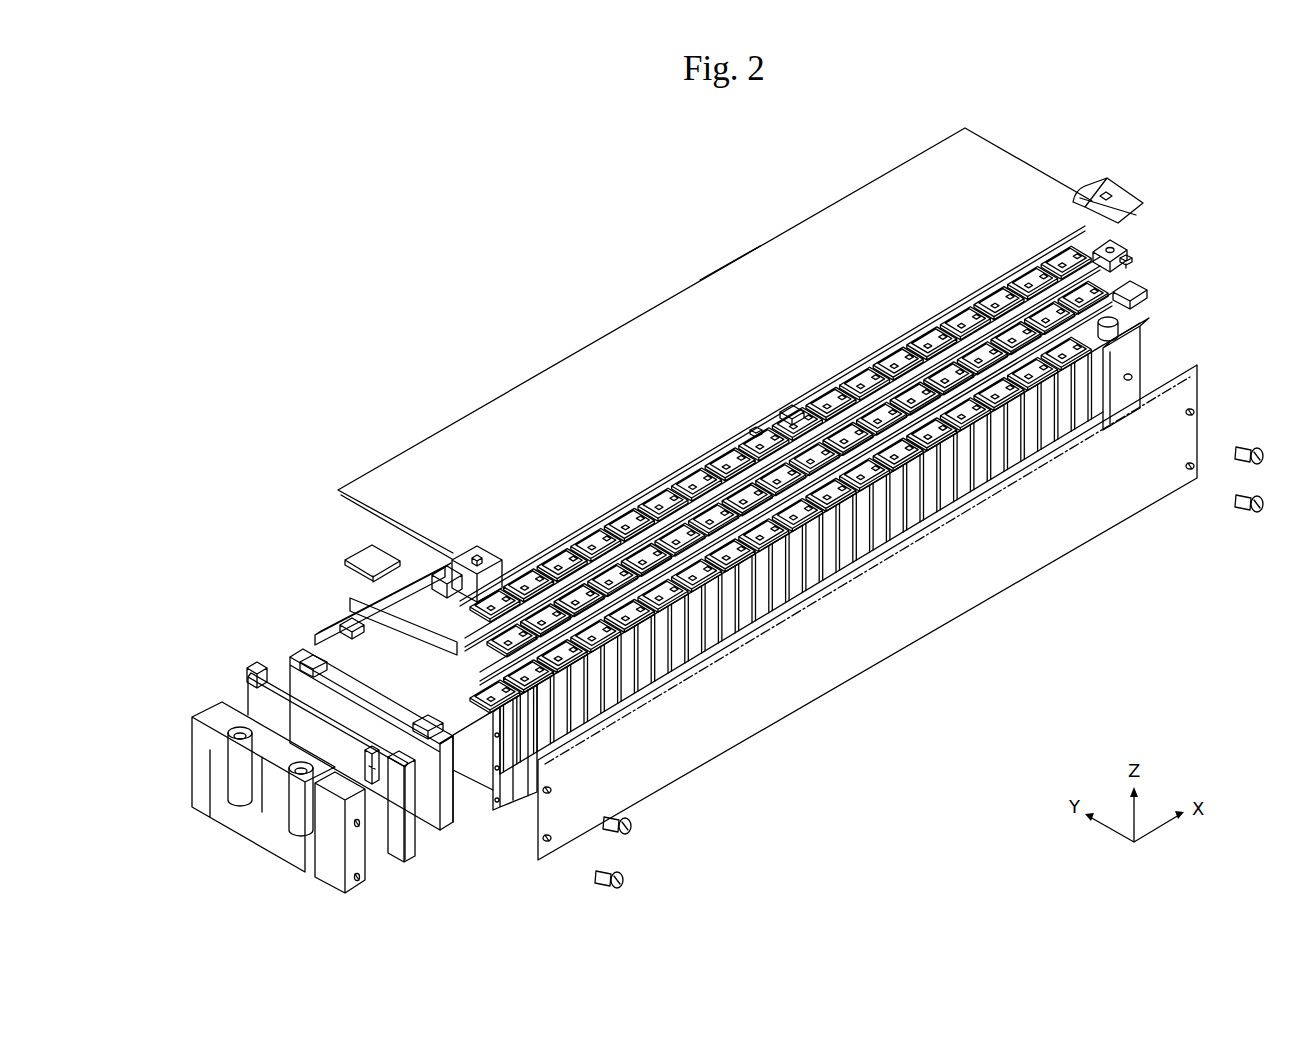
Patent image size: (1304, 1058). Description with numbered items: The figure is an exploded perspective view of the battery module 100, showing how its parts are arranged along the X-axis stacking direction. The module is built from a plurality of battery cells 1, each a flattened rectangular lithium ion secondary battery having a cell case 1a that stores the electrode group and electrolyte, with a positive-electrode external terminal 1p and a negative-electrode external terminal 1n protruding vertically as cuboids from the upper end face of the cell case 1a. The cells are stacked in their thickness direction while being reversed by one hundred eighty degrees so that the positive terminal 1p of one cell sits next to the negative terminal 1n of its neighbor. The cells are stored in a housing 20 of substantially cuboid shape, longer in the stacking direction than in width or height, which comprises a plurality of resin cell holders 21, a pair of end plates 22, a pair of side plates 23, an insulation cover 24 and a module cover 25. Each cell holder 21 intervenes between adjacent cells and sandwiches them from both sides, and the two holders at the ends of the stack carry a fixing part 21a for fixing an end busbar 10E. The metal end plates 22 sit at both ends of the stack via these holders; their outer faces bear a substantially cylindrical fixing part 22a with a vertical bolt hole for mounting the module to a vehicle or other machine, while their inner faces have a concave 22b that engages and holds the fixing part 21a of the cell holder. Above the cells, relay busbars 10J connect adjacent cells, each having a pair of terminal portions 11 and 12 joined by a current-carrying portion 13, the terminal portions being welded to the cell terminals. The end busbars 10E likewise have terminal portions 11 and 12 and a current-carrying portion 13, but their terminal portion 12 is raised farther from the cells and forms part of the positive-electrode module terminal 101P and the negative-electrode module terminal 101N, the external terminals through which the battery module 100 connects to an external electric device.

The battery module 100 is at (338, 249).
The battery cell 1 is at (285, 642).
The cell case 1a is at (450, 808).
The negative-electrode external terminal 1n is at (350, 630).
The positive-electrode external terminal 1p is at (312, 647).
The relay busbar 10J is at (1033, 260).
The end busbar 10E is at (1142, 248).
The negative-electrode module terminal 101N is at (481, 550).
The positive-electrode module terminal 101P is at (1187, 182).
The terminal portion 11 is at (1083, 267).
The terminal portion 12 is at (1092, 200).
The current-carrying portion 13 is at (1135, 262).
The housing 20 is at (846, 170).
The cell holder 21 is at (247, 658).
The fixing part 21a is at (372, 780).
The end plate 22 is at (208, 703).
The fixing part 22a is at (243, 797).
The concave 22b is at (340, 785).
The side plate 23 is at (1010, 540).
The insulation cover 24 is at (1147, 298).
The module cover 25 is at (794, 264).